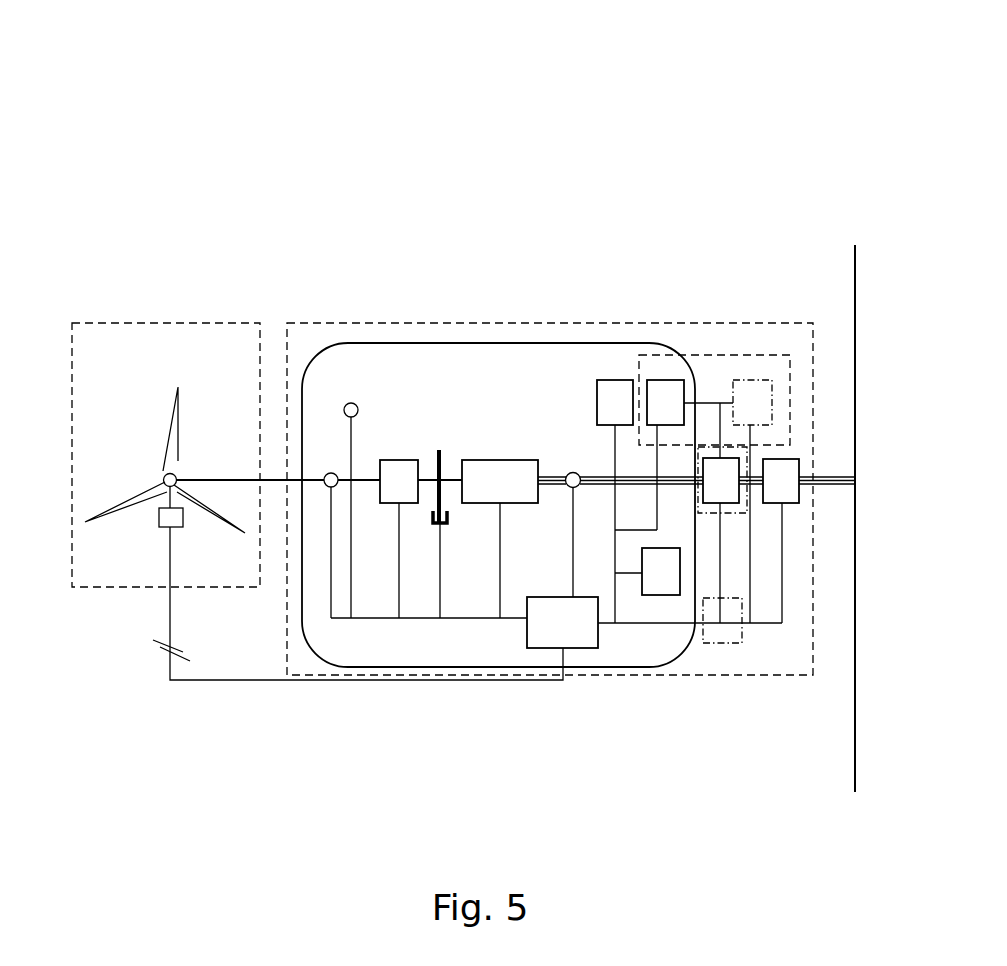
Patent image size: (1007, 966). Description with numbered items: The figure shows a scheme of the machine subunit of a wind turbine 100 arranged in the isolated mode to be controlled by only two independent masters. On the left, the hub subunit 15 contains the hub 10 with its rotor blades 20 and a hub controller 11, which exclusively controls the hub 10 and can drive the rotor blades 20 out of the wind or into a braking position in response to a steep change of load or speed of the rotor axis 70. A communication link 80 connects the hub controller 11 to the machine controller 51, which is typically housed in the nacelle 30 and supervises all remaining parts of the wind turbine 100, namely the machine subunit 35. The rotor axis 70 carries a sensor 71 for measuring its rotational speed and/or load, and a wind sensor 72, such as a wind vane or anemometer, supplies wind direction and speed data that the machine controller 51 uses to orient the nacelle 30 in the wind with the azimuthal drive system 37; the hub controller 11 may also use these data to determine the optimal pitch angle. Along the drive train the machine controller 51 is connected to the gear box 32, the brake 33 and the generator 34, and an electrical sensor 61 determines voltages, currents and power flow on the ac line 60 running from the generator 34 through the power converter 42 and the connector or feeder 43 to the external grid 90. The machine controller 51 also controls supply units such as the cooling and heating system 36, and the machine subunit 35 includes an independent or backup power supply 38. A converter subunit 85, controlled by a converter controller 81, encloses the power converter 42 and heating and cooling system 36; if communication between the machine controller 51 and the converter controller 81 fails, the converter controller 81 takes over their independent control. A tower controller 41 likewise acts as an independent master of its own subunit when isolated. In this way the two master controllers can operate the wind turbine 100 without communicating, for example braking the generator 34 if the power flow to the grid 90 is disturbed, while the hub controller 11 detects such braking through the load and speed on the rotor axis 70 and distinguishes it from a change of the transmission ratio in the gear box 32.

The wind turbine 100 is at (508, 36).
The hub subunit 15 is at (197, 318).
The hub 10 is at (167, 477).
The rotor blades 20 is at (125, 508).
The hub controller 11 is at (185, 530).
The communication link 80 is at (230, 681).
The rotor axis 70 is at (277, 477).
The sensor 71 is at (329, 473).
The wind sensor 72 is at (351, 403).
The nacelle 30 is at (520, 342).
The machine subunit 35 is at (560, 318).
The gear box 32 is at (399, 460).
The brake 33 is at (438, 449).
The generator 34 is at (488, 460).
The electrical sensor 61 is at (575, 472).
The machine controller 51 is at (548, 650).
The azimuthal drive system 37 is at (617, 380).
The cooling and heating system 36 is at (668, 380).
The backup power supply 38 is at (667, 596).
The converter controller 81 is at (747, 379).
The converter subunit 85 is at (764, 352).
The power converter 42 is at (712, 458).
The tower controller 41 is at (722, 644).
The connector or feeder 43 is at (790, 504).
The ac line 60 is at (830, 477).
The external grid 90 is at (853, 303).